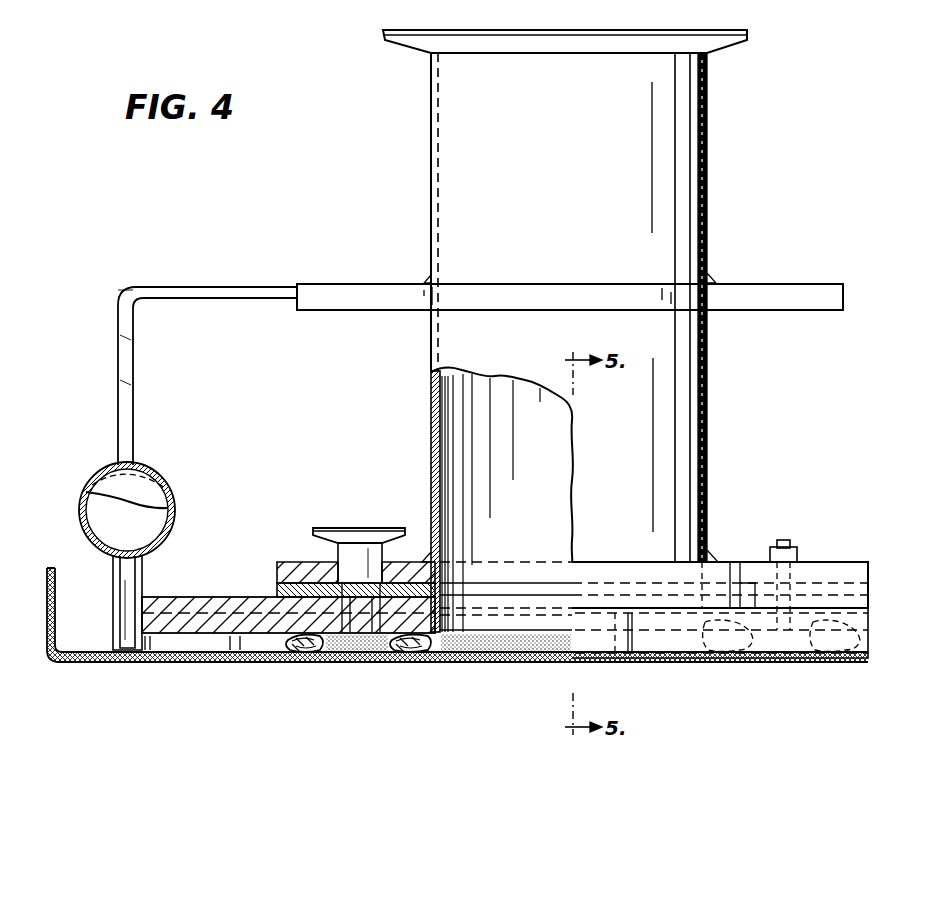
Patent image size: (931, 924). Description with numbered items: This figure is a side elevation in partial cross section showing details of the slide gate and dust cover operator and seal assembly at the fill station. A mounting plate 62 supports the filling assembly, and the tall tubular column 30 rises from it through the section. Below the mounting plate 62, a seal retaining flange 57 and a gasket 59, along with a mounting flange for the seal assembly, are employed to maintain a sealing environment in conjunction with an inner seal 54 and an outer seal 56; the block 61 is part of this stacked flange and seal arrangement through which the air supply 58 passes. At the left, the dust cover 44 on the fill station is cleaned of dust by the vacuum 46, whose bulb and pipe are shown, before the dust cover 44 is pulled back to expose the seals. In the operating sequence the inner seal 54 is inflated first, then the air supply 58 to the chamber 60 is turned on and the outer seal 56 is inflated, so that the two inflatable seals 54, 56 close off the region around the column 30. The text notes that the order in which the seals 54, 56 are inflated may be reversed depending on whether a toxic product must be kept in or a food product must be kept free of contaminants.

The tubular column 30 is at (680, 133).
The mounting plate 62 is at (352, 295).
The vacuum 46 is at (157, 477).
The dust cover 44 is at (47, 588).
The seal retaining flange 57 is at (213, 603).
The gasket 59 is at (275, 590).
The clamp block 61 is at (295, 564).
The air supply 58 is at (352, 528).
The outer seal 56 is at (290, 652).
The chamber 60 is at (360, 655).
The inner seal 54 is at (412, 655).